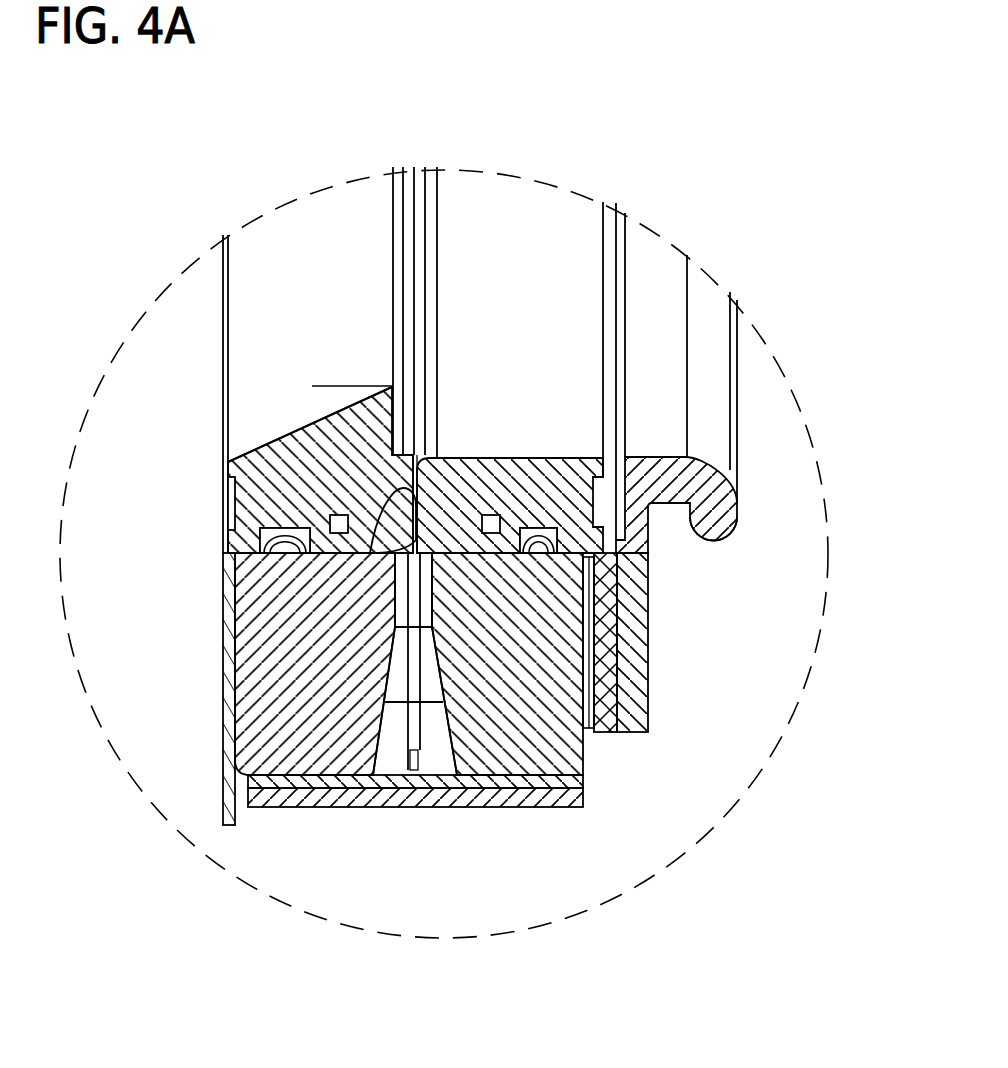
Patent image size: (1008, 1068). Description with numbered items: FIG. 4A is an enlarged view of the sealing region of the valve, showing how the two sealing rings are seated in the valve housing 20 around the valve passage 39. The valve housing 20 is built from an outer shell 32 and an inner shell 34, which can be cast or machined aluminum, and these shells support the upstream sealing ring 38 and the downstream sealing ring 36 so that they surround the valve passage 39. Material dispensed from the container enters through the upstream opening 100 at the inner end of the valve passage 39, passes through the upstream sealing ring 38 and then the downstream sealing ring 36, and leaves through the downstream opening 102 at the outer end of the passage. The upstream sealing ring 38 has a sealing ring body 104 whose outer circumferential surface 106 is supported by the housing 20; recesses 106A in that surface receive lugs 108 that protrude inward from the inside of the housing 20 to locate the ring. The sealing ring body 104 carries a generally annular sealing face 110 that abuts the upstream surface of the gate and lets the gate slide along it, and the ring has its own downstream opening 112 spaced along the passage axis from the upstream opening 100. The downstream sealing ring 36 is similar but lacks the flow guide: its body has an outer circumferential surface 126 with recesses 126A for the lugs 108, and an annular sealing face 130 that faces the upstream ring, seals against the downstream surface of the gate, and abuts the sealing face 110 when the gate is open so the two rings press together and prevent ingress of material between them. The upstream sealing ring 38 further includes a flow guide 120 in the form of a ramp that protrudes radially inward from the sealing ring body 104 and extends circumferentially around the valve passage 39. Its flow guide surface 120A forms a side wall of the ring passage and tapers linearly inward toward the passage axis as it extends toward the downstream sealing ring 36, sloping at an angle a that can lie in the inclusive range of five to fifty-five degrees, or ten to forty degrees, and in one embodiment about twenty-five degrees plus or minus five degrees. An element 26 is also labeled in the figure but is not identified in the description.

The valve housing 20 is at (533, 808).
The hook portion 26 is at (717, 533).
The outer shell 32 is at (650, 712).
The inner shell 34 is at (223, 718).
The downstream sealing ring 36 is at (598, 513).
The upstream sealing ring 38 is at (230, 512).
The valve passage 39 is at (380, 276).
The upstream opening 100 is at (359, 439).
The downstream opening 102 is at (735, 470).
The sealing ring body 104 is at (320, 507).
The outer circumferential surface 106 is at (325, 607).
The recesses 106A is at (290, 545).
The lugs 108 is at (303, 534).
The sealing face 110 is at (370, 553).
The downstream opening 112 is at (410, 458).
The flow guide 120 is at (264, 440).
The flow guide surface 120A is at (322, 450).
The outer circumferential surface 126 is at (477, 556).
The recesses 126A is at (531, 530).
The sealing face 130 is at (341, 555).
The angle α a is at (342, 393).